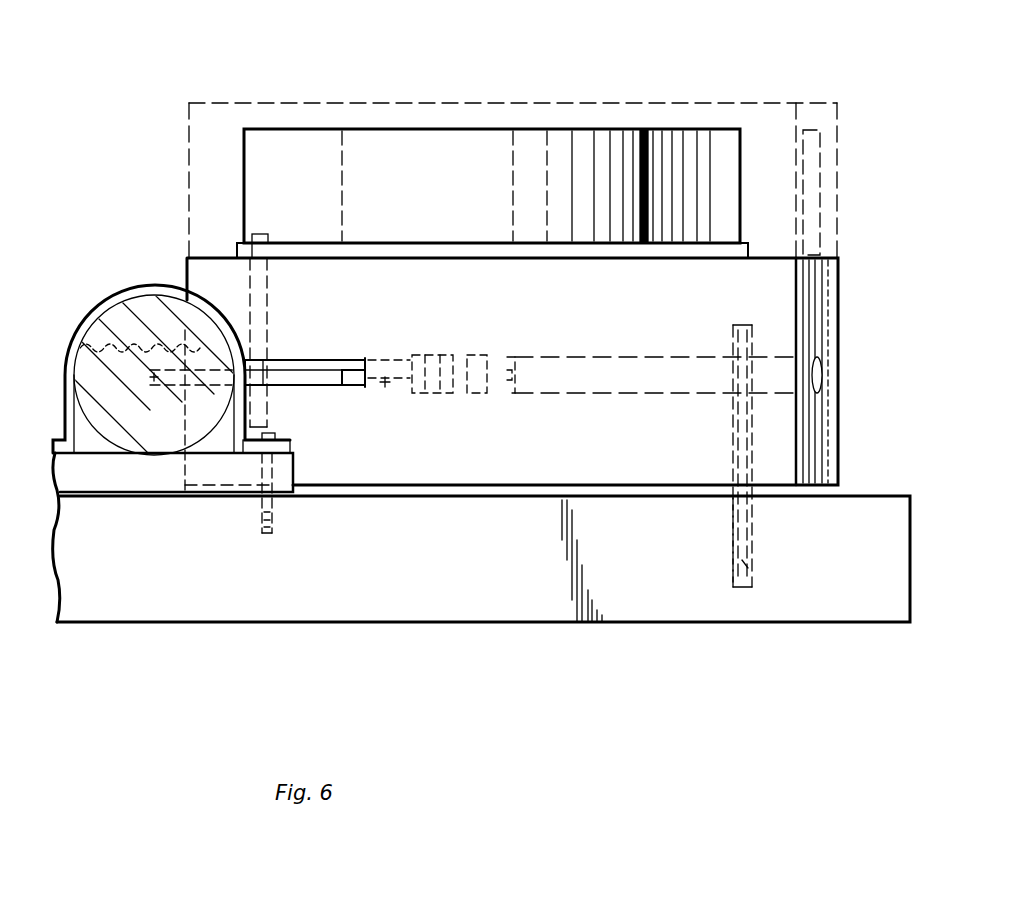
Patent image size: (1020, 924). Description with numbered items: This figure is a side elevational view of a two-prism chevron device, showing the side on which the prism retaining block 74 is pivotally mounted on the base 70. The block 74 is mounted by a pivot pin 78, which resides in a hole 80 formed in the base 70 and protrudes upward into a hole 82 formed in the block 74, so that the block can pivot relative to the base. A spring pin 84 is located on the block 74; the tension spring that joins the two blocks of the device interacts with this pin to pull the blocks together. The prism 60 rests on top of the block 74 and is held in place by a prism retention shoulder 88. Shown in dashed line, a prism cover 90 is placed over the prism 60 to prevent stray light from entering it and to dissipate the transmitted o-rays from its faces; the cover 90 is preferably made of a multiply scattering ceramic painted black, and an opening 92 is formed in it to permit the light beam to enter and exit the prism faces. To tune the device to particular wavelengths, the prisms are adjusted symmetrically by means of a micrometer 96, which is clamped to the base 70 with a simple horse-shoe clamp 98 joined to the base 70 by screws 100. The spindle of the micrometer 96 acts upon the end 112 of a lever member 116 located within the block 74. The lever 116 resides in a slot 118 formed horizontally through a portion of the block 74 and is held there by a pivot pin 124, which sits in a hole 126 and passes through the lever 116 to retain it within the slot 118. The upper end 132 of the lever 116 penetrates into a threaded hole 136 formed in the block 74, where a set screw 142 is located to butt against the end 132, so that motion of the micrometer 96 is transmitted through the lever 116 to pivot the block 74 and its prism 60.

The prism 60 is at (590, 181).
The base 70 is at (477, 547).
The prism retaining block 74 is at (620, 452).
The pivot pin 78 is at (735, 552).
The hole 80 is at (125, 300).
The hole 82 is at (732, 463).
The spring pin 84 is at (205, 343).
The prism retention shoulder 88 is at (497, 250).
The prism cover 90 is at (511, 102).
The opening 92 is at (815, 190).
The micrometer 96 is at (187, 445).
The horse-shoe clamp 98 is at (292, 451).
The screws 100 is at (277, 440).
The end of lever member 112 is at (150, 397).
The lever member 116 is at (310, 368).
The slot 118 is at (366, 360).
The pivot pin 124 is at (260, 234).
The hole 126 is at (270, 303).
The upper end of lever 132 is at (386, 394).
The threaded hole 136 is at (580, 370).
The set screw 142 is at (487, 355).